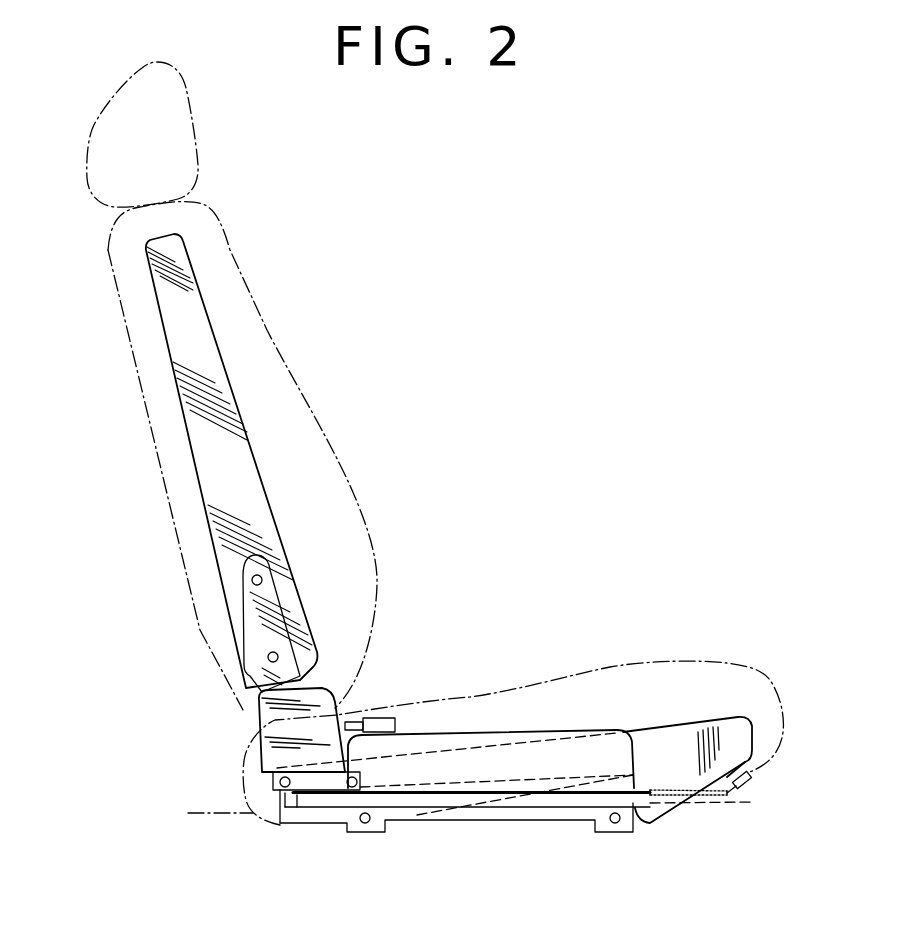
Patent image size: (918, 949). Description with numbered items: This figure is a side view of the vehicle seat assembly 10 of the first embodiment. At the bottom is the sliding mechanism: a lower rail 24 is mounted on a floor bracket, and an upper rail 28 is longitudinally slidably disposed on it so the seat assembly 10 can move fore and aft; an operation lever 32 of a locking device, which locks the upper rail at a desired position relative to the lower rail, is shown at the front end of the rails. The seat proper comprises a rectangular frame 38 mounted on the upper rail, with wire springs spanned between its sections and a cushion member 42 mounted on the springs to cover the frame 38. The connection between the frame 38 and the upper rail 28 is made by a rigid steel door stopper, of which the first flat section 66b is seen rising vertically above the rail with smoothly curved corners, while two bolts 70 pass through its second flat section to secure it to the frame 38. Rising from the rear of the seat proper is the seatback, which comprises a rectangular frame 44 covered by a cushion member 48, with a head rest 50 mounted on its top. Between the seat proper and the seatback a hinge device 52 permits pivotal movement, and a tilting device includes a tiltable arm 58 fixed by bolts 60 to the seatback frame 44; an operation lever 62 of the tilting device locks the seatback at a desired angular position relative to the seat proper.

The vehicle seat assembly 10 is at (317, 410).
The lower rail 24 is at (650, 823).
The upper rail 28 is at (640, 790).
The operation lever 32 is at (750, 784).
The rectangular frame 38 is at (735, 728).
The cushion member 42 is at (672, 668).
The rectangular frame 44 is at (170, 287).
The cushion member 48 is at (247, 307).
The head rest 50 is at (100, 153).
The hinge device 52 is at (258, 717).
The tiltable arm 58 is at (260, 613).
The bolts 60 is at (252, 580).
The operation lever 62 is at (390, 718).
The first flat section 66b is at (517, 735).
The bolts 70 is at (365, 826).